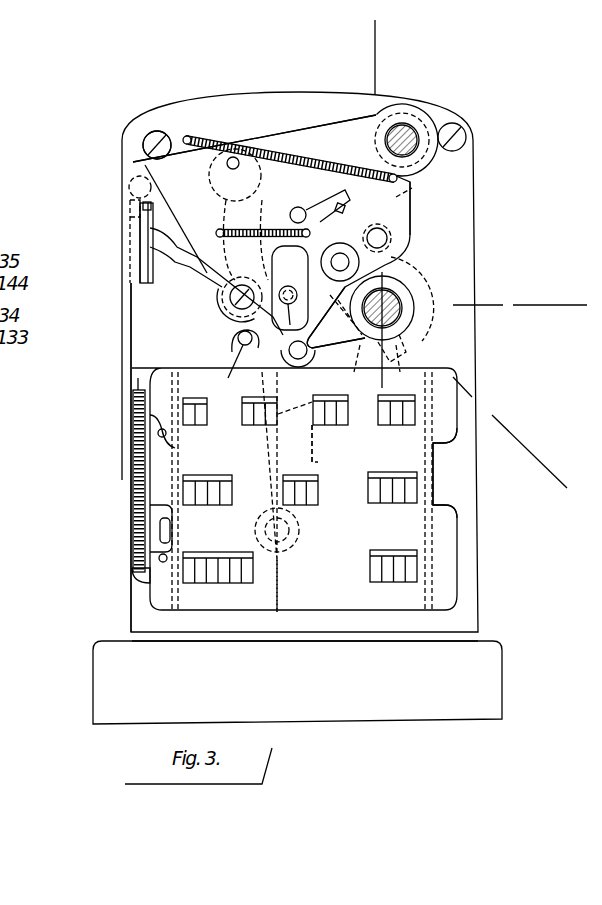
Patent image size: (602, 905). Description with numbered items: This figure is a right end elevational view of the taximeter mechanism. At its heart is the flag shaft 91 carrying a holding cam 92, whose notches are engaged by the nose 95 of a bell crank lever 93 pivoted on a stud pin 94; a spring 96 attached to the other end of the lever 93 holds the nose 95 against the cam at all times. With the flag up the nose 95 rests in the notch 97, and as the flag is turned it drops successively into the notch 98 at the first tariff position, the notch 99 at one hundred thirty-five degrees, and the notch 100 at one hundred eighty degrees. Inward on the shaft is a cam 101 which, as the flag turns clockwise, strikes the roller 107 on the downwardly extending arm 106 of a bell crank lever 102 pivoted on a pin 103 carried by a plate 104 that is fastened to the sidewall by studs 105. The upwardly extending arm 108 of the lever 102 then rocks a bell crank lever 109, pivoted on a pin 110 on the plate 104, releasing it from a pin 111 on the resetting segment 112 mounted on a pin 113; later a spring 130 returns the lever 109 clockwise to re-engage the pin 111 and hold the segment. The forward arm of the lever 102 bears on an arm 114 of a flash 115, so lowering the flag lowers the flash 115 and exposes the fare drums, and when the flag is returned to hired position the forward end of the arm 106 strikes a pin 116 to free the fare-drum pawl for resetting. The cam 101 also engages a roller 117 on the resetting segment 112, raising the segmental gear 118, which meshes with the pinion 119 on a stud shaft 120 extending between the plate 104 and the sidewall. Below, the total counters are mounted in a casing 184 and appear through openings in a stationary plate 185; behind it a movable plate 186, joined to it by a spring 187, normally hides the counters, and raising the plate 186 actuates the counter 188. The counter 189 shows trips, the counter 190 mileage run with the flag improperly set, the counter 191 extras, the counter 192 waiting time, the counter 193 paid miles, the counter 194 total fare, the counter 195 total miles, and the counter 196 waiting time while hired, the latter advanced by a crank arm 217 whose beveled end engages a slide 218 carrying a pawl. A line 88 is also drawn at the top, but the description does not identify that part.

The rod 88 is at (375, 70).
The flag shaft 91 is at (400, 293).
The holding cam 92 is at (430, 302).
The bell crank lever 93 is at (128, 183).
The stud pin 94 is at (386, 143).
The nose 95 is at (331, 310).
The spring 96 is at (148, 209).
The notch 97 is at (346, 317).
The notch 98 is at (366, 369).
The notch 99 is at (400, 369).
The notch 100 is at (410, 338).
The cam 101 is at (336, 318).
The bell crank lever 102 is at (204, 282).
The pin 103 is at (300, 319).
The plate 104 is at (254, 169).
The studs 105 is at (143, 143).
The downwardly extending arm 106 is at (238, 338).
The roller 107 is at (290, 350).
The upwardly extending arm 108 is at (292, 288).
The bell crank lever 109 is at (290, 214).
The pin 110 is at (299, 206).
The pin 111 is at (345, 210).
The resetting segment 112 is at (409, 214).
The pin 113 is at (388, 237).
The arm 114 is at (138, 265).
The flash 115 is at (130, 331).
The pin 116 is at (231, 371).
The roller 117 is at (339, 253).
The segmental gear 118 is at (298, 213).
The pinion 119 is at (218, 182).
The stud shaft 120 is at (234, 158).
The spring 130 is at (257, 243).
The casing 184 is at (433, 495).
The stationary plate 185 is at (329, 574).
The movable plate 186 is at (440, 362).
The spring 187 is at (135, 503).
The counter 188 is at (197, 425).
The counter 189 is at (328, 426).
The counter 190 is at (397, 423).
The counter 191 is at (211, 505).
The counter 192 is at (314, 505).
The counter 193 is at (394, 500).
The counter 194 is at (237, 584).
The counter 195 is at (397, 583).
The counter 196 is at (252, 425).
The crank arm 217 is at (313, 463).
The slide 218 is at (280, 601).